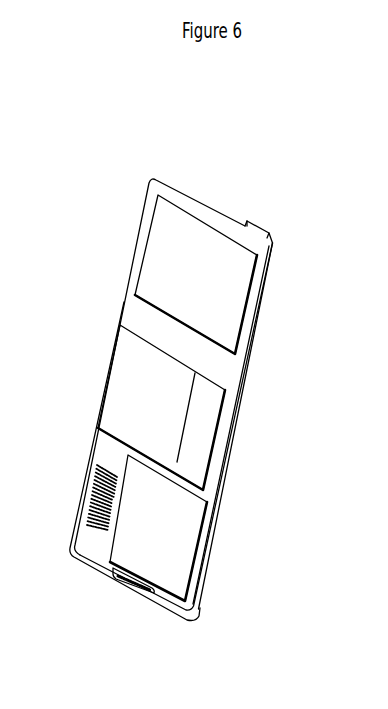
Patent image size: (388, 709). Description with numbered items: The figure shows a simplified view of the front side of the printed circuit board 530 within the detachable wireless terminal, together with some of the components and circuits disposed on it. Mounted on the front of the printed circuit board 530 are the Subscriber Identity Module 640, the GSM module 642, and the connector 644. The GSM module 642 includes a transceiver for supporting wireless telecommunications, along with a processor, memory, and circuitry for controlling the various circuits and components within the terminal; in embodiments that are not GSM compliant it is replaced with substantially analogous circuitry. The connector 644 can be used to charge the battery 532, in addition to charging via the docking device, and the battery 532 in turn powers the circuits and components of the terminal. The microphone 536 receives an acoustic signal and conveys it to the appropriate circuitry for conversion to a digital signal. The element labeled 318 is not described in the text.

The housing 318 is at (91, 428).
The printed circuit board 530 is at (172, 616).
The battery 532 is at (244, 408).
The microphone 536 is at (262, 227).
The Subscriber Identity Module 640 is at (155, 268).
The GSM module 642 is at (109, 363).
The connector 644 is at (122, 588).